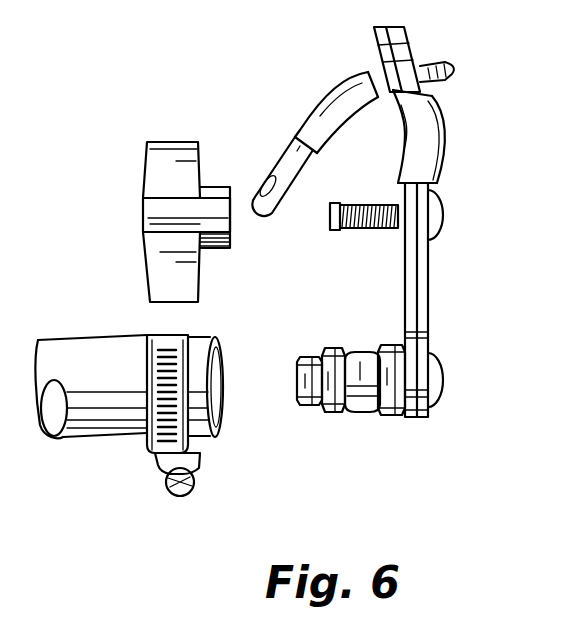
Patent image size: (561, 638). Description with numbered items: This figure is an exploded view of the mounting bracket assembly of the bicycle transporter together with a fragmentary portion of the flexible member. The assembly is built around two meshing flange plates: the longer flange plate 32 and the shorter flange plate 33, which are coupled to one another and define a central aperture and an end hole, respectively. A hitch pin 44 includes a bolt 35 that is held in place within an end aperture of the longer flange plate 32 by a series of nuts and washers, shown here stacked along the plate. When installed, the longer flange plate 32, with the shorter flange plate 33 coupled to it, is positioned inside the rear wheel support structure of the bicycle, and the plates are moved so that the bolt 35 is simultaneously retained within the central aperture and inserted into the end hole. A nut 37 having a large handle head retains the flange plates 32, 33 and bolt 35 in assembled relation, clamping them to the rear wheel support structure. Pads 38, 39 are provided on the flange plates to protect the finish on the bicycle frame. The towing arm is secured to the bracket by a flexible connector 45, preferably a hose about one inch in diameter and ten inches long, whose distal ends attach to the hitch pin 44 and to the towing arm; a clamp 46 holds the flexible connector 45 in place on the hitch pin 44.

The longer flange plate 32 is at (422, 295).
The shorter flange plate 33 is at (293, 157).
The bolt 35 is at (352, 227).
The nut 37 is at (143, 217).
The pad 38 is at (432, 133).
The pad 39 is at (340, 98).
The hitch pin 44 is at (360, 402).
The flexible connector 45 is at (102, 392).
The clamp 46 is at (193, 488).